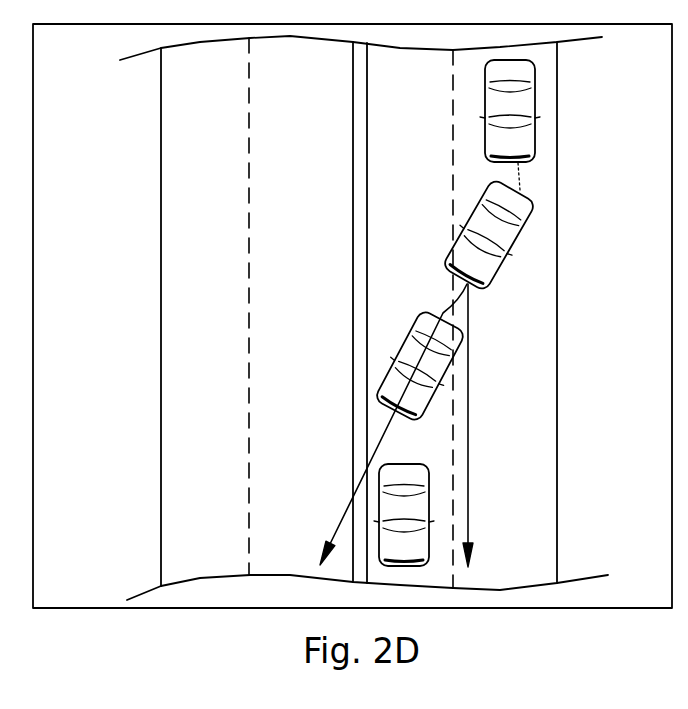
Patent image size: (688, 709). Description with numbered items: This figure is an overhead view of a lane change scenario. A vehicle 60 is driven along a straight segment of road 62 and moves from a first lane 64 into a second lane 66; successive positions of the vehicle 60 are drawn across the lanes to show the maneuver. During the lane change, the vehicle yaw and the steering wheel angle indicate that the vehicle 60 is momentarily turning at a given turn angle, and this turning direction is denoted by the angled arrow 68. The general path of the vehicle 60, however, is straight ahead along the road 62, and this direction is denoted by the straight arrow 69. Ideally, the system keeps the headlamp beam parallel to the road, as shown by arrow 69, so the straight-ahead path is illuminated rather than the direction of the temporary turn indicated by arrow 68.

The vehicle 60 is at (540, 103).
The road 62 is at (540, 456).
The first lane 64 is at (529, 551).
The second lane 66 is at (416, 154).
The arrow 68 is at (342, 522).
The arrow 69 is at (472, 421).